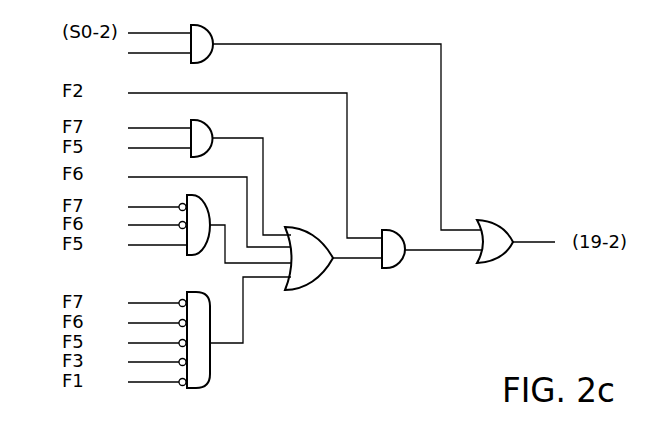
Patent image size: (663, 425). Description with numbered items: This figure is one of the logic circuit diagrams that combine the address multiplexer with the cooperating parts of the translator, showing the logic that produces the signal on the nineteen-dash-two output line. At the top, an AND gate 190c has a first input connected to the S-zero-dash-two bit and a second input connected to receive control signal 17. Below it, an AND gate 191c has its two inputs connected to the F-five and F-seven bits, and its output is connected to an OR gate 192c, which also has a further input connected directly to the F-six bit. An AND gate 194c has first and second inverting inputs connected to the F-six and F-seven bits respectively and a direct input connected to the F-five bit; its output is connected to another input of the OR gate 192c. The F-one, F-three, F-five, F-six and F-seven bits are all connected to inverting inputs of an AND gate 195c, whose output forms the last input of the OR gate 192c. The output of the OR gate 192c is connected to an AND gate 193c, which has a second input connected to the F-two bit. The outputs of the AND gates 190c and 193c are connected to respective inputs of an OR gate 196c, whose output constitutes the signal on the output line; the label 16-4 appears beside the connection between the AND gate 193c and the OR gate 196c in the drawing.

The control signal 17 is at (126, 51).
The AND gate 190c is at (205, 38).
The AND gate 191c is at (200, 130).
The OR gate 192c is at (304, 243).
The AND gate 193c is at (395, 240).
The AND gate 194c is at (202, 220).
The AND gate 195c is at (200, 370).
The OR gate 196c is at (495, 234).
The output signal line 16-4 is at (443, 267).